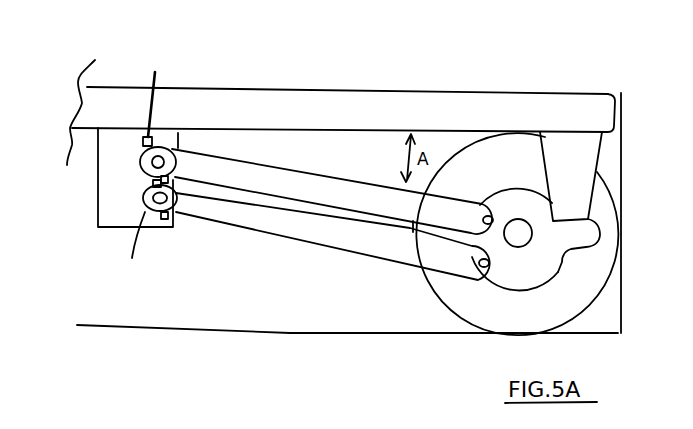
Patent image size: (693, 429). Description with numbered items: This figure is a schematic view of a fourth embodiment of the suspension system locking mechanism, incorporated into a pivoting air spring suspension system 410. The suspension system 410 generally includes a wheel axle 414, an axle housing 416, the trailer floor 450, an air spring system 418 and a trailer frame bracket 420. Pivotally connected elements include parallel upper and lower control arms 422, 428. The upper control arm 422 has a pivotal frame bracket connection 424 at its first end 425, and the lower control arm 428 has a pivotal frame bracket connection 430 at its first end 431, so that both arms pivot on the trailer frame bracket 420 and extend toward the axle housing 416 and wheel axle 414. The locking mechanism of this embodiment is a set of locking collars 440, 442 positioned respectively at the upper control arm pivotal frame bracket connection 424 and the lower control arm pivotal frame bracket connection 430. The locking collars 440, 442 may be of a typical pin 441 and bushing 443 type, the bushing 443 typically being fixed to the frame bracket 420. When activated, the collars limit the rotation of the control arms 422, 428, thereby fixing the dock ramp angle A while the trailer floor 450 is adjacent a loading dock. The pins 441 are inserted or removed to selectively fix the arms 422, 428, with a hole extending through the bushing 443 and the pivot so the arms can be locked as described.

The pivoting air spring suspension system 410 is at (279, 316).
The wheel axle 414 is at (520, 242).
The axle housing 416 is at (550, 262).
The air spring system 418 is at (587, 155).
The trailer frame bracket 420 is at (110, 215).
The upper control arm 422 is at (323, 185).
The pivotal frame bracket connection 424 is at (175, 166).
The first end 425 is at (141, 150).
The lower control arm 428 is at (320, 233).
The pivotal frame bracket connection 430 is at (175, 200).
The first end 431 is at (141, 198).
The locking collar 440 is at (173, 148).
The pin 441 is at (80, 172).
The locking collar 442 is at (147, 207).
The bushing 443 is at (140, 160).
The trailer floor 450 is at (410, 97).